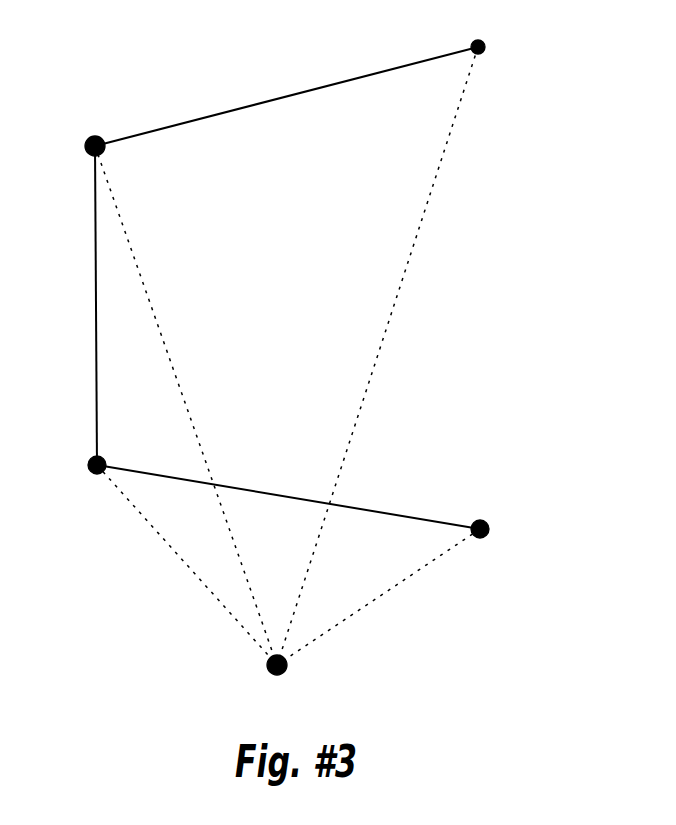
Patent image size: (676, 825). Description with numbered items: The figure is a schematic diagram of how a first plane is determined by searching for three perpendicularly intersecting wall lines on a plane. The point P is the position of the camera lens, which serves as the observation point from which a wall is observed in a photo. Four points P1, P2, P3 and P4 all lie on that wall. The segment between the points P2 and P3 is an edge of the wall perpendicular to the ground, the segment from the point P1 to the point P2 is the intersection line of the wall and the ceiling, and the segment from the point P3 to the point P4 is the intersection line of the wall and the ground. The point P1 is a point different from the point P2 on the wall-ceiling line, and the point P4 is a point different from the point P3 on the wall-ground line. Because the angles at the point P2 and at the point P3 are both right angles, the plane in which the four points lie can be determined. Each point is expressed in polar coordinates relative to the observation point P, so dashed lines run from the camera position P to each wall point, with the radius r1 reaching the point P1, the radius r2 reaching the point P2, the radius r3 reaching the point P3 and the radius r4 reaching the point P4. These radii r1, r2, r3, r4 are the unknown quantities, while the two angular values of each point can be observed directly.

The point on wall-ceiling intersection line P1 is at (497, 28).
The upper corner point of wall edge P2 is at (115, 125).
The lower corner point of wall edge P3 is at (120, 450).
The point on wall-ground intersection line P4 is at (501, 511).
The camera lens position P is at (277, 688).
The radius of P1 r1 is at (377, 356).
The radius of P2 r2 is at (186, 405).
The radius of P3 r3 is at (187, 565).
The radius of P4 r4 is at (378, 597).